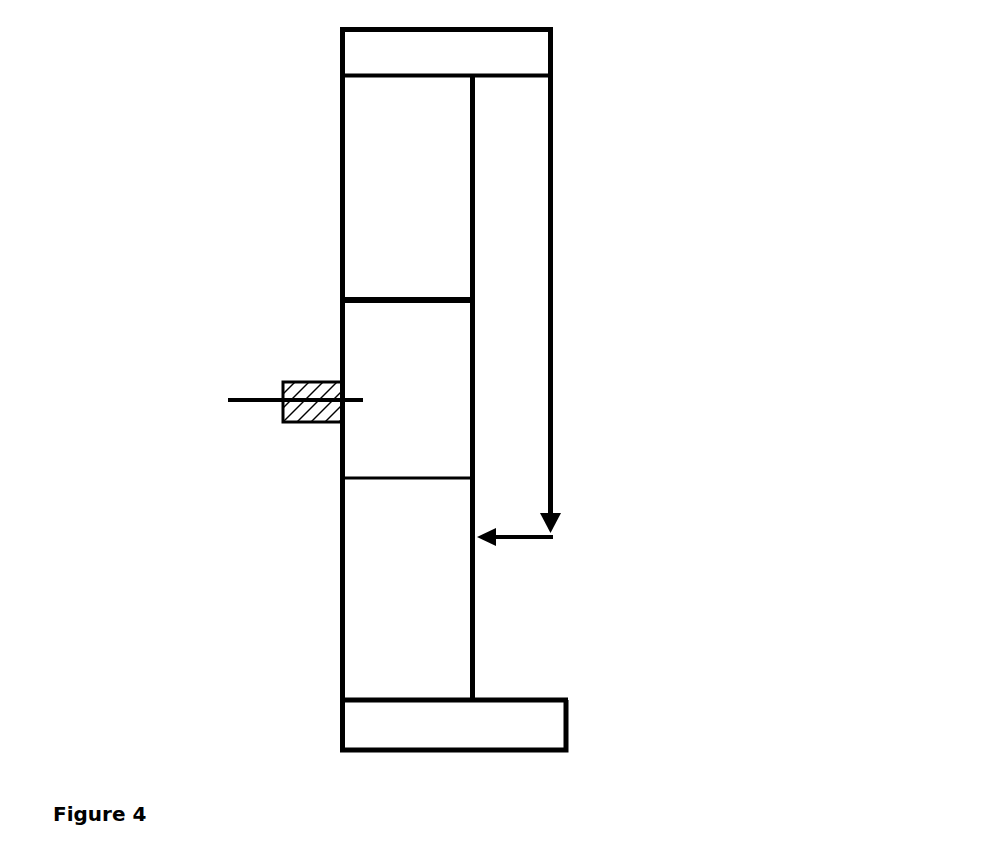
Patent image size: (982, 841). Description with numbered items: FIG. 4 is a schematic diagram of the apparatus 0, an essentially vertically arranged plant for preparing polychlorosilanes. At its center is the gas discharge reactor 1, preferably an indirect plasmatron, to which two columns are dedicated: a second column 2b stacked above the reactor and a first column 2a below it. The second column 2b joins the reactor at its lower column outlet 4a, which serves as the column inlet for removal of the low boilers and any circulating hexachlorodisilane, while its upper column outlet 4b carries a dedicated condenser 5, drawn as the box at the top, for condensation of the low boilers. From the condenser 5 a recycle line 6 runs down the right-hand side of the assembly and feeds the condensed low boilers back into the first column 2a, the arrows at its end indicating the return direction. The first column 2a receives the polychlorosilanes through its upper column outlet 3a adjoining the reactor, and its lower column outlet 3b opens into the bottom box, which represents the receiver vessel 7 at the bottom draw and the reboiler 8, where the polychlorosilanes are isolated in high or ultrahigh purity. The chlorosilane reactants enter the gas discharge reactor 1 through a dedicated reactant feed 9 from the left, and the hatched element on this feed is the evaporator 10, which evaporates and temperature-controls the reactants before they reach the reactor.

The apparatus 0 is at (662, 93).
The gas discharge reactor 1 is at (407, 390).
The first column 2a is at (407, 589).
The second column 2b is at (407, 188).
The upper column outlet of the first column 3a is at (362, 500).
The lower column outlet of the first column 3b is at (362, 683).
The lower column outlet of the second column 4a is at (362, 270).
The upper column outlet of the second column 4b is at (355, 93).
The condenser 5 is at (447, 52).
The recycle line 6 is at (553, 268).
The receiver vessel 7 is at (455, 725).
The reboiler 8 is at (454, 726).
The reactant feed 9 is at (230, 400).
The evaporator 10 is at (292, 383).